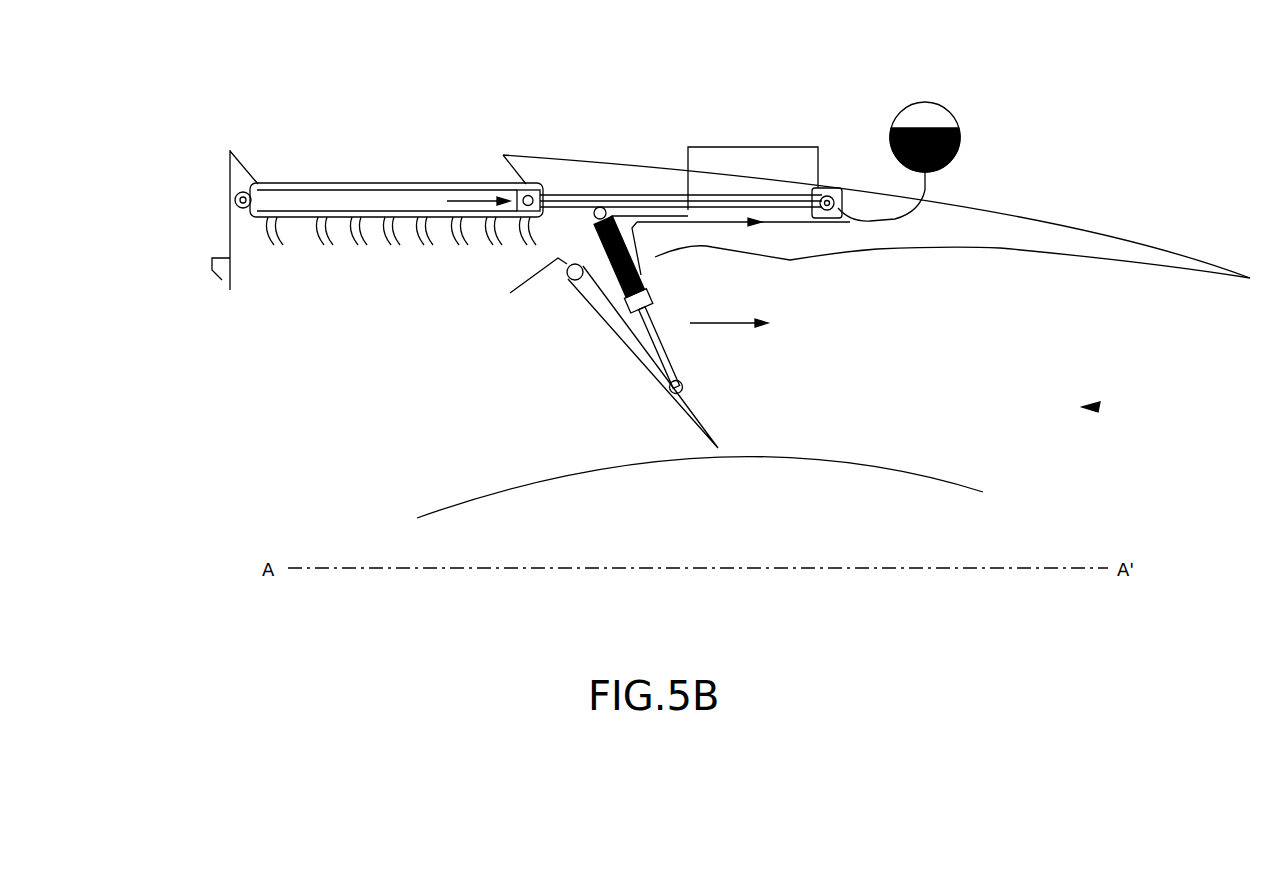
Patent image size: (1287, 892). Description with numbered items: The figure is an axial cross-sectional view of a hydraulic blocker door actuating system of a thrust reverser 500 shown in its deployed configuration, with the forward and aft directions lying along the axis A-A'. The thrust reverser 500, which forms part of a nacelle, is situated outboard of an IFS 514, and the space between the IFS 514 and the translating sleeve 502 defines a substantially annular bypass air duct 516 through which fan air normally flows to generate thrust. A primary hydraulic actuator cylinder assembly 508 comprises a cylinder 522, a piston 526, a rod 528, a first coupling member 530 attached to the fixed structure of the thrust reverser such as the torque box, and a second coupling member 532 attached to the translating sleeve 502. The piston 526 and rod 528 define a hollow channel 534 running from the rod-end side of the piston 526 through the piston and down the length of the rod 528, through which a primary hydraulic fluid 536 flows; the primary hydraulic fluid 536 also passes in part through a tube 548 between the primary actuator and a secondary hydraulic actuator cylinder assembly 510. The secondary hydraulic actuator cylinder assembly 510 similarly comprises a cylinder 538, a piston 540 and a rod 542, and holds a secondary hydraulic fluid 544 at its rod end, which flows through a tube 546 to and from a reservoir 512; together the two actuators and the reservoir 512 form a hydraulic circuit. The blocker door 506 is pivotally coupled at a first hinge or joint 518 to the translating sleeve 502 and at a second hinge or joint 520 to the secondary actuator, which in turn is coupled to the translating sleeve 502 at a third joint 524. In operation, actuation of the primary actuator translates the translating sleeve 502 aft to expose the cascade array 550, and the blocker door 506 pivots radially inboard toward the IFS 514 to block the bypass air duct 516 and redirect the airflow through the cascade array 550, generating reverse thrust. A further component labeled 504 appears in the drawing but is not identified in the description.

The thrust reverser 500 is at (303, 77).
The translating sleeve 502 is at (600, 193).
The actuator cylinder 504 is at (308, 193).
The blocker door 506 is at (681, 408).
The primary hydraulic actuator cylinder assembly 508 is at (335, 222).
The secondary hydraulic actuator cylinder assembly 510 is at (580, 247).
The reservoir 512 is at (947, 104).
The IFS 514 is at (940, 486).
The bypass air duct 516 is at (1098, 408).
The first hinge or joint 518 is at (567, 280).
The second hinge or joint 520 is at (692, 388).
The cylinder 522 is at (276, 240).
The third joint 524 is at (604, 208).
The piston 526 is at (530, 186).
The rod 528 is at (616, 194).
The first coupling member 530 is at (230, 210).
The second coupling member 532 is at (860, 224).
The channel 534 is at (571, 194).
The primary hydraulic fluid 536 is at (713, 205).
The cylinder 538 is at (640, 268).
The piston 540 is at (650, 298).
The rod 542 is at (660, 327).
The secondary hydraulic fluid 544 is at (953, 166).
The tube 546 is at (930, 187).
The tube 548 is at (824, 155).
The cascade array 550 is at (431, 214).